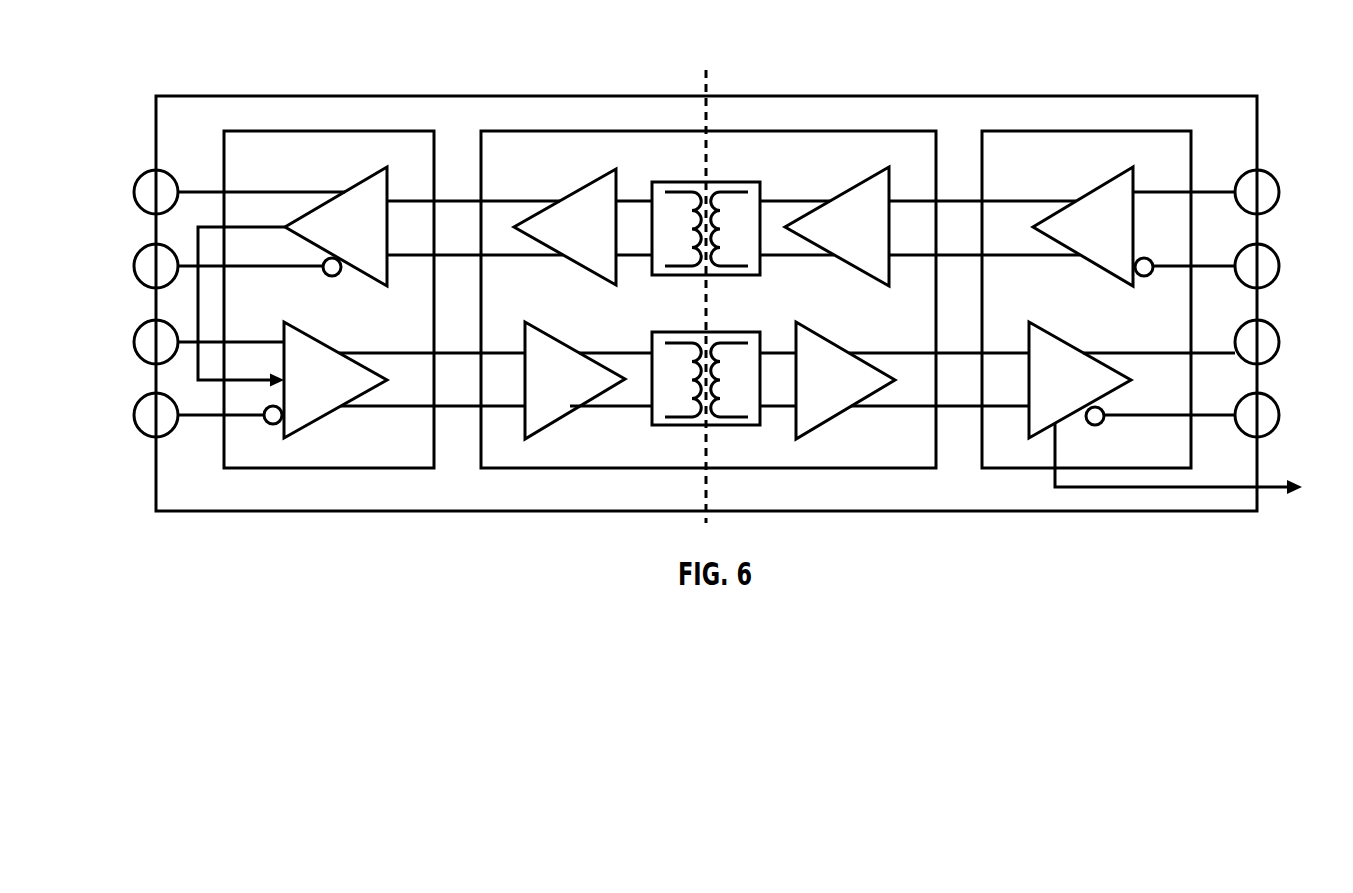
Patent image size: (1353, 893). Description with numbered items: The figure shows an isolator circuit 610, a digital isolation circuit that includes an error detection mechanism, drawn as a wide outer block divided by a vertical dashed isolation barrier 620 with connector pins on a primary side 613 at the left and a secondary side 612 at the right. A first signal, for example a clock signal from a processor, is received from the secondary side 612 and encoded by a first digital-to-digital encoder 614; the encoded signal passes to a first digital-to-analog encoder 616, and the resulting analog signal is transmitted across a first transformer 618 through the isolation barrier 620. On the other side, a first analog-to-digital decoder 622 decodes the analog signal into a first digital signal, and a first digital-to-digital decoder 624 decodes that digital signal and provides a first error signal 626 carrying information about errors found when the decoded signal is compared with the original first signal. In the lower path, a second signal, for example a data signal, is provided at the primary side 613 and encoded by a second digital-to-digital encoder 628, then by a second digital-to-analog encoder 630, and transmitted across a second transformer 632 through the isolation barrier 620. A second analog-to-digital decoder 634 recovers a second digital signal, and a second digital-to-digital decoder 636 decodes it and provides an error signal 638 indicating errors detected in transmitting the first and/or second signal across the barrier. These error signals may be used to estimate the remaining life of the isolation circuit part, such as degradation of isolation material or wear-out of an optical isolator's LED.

The isolator circuit 610 is at (652, 95).
The isolation barrier 620 is at (707, 86).
The secondary side 612 is at (1258, 228).
The primary side 613 is at (156, 380).
The first digital-to-digital encoder 614 is at (1108, 182).
The first digital-to-analog encoder 616 is at (865, 181).
The first transformer 618 is at (696, 182).
The first analog-to-digital decoder 622 is at (590, 183).
The first digital-to-digital decoder 624 is at (360, 181).
The first error signal 626 is at (198, 247).
The second digital-to-digital encoder 628 is at (310, 336).
The second digital-to-analog encoder 630 is at (550, 336).
The second transformer 632 is at (700, 332).
The second analog-to-digital decoder 634 is at (820, 336).
The second digital-to-digital decoder 636 is at (1053, 336).
The error signal 638 is at (1175, 489).